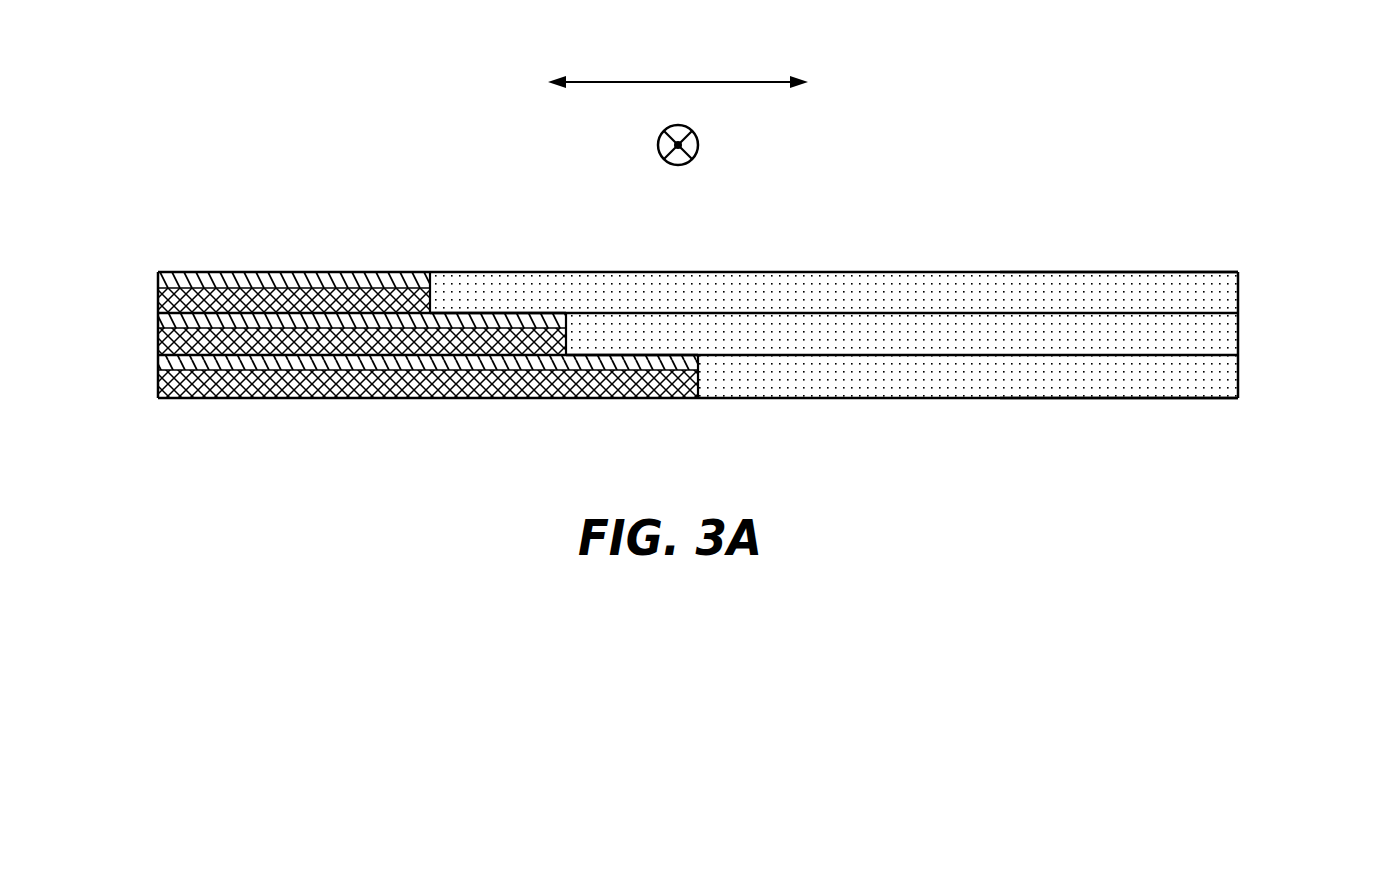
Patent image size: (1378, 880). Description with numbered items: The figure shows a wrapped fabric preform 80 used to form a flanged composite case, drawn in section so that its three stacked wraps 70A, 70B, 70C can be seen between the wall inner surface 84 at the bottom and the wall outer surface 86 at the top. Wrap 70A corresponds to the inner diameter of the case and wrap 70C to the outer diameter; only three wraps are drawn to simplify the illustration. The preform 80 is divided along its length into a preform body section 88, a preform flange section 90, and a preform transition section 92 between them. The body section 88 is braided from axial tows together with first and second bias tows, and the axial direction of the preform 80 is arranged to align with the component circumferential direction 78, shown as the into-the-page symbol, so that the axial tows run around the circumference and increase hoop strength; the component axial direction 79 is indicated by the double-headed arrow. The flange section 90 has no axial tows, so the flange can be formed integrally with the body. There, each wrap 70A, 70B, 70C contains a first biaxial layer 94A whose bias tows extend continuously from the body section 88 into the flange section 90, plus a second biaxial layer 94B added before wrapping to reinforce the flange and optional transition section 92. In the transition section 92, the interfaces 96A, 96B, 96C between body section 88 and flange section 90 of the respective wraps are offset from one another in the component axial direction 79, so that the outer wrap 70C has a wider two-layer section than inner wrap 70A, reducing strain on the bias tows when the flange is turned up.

The wrap 70A is at (1254, 374).
The wrap 70B is at (1254, 337).
The wrap 70C is at (1254, 293).
The component circumferential direction 78 is at (702, 145).
The component axial direction 79 is at (656, 82).
The wrapped fabric preform 80 is at (1141, 169).
The wall inner surface 84 is at (1057, 398).
The wall outer surface 86 is at (1063, 272).
The preform body section 88 is at (1240, 247).
The preform flange section 90 is at (428, 247).
The preform transition section 92 is at (698, 247).
The first biaxial layer 94A is at (158, 303).
The second biaxial layer 94B is at (158, 325).
The interface 96A is at (696, 375).
The interface 96B is at (562, 333).
The interface 96C is at (425, 297).